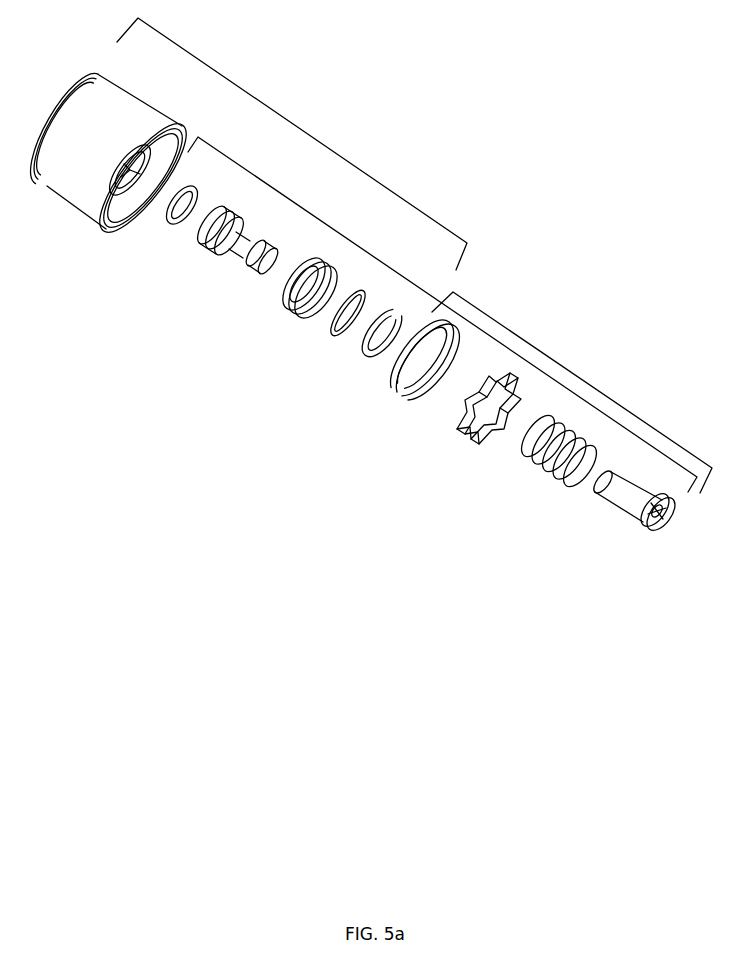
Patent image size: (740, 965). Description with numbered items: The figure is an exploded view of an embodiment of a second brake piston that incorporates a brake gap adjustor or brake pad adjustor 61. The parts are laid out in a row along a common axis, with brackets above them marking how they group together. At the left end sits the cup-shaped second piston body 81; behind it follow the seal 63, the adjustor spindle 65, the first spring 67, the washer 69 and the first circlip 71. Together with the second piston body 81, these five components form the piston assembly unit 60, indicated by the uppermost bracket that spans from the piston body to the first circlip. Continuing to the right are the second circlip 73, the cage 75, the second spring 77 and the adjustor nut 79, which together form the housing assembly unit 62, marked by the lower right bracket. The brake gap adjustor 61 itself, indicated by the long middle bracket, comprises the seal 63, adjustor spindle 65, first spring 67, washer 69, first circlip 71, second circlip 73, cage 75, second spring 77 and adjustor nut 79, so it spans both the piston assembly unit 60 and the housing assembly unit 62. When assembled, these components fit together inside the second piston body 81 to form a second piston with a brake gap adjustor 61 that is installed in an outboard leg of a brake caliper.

The piston assembly unit 60 is at (300, 129).
The brake gap adjustor 61 is at (345, 238).
The housing assembly unit 62 is at (580, 378).
The seal 63 is at (170, 222).
The adjustor spindle 65 is at (257, 263).
The first spring 67 is at (292, 317).
The washer 69 is at (340, 336).
The first circlip 71 is at (383, 362).
The second circlip 73 is at (417, 400).
The cage 75 is at (498, 440).
The second spring 77 is at (562, 475).
The adjustor nut 79 is at (643, 540).
The second piston body 81 is at (72, 192).